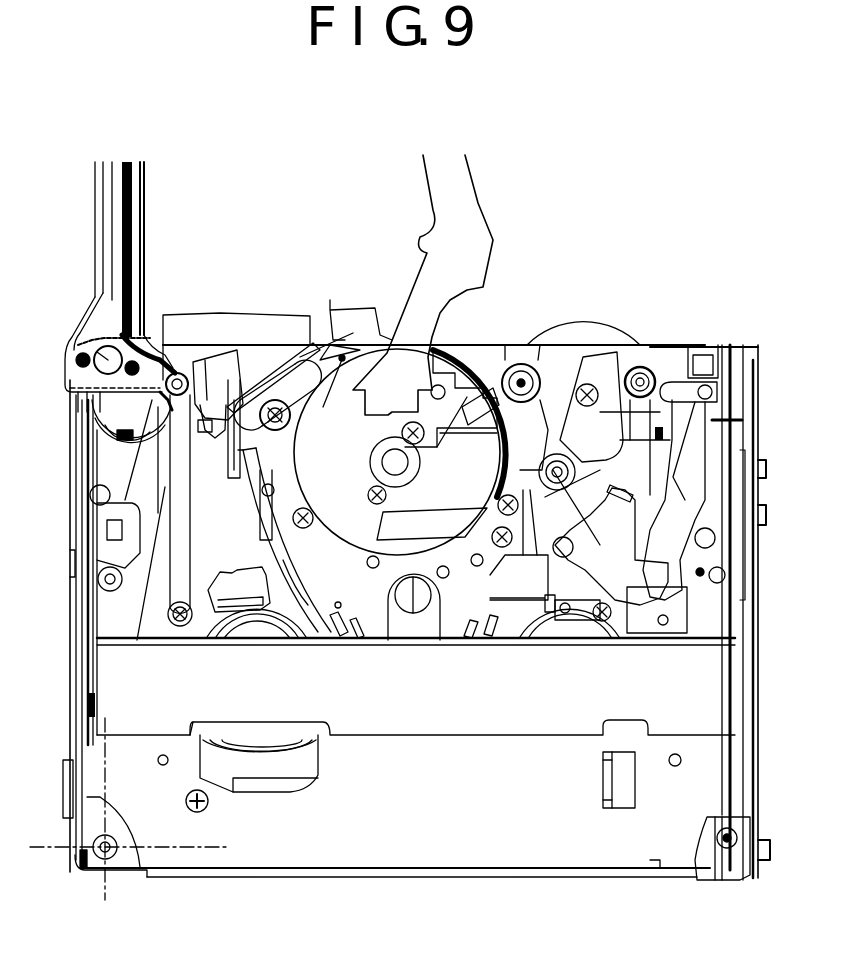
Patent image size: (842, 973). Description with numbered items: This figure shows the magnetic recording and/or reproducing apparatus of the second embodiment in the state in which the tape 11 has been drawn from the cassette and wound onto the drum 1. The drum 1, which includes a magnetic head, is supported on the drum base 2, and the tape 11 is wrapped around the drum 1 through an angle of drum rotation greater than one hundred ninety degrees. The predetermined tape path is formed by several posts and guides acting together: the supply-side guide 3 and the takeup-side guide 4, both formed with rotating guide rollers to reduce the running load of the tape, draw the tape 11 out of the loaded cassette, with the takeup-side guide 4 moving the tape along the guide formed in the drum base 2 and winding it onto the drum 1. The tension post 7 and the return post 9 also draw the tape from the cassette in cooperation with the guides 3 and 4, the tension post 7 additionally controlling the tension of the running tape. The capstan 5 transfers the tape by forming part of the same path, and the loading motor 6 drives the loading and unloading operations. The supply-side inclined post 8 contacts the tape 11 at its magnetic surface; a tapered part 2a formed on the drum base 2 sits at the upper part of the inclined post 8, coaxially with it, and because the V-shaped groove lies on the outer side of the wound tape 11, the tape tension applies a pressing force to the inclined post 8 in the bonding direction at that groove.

The drum 1 is at (338, 407).
The drum base 2 is at (211, 372).
The tapered part 2a is at (222, 478).
The supply-side guide 3 is at (272, 400).
The takeup-side guide 4 is at (532, 365).
The capstan 5 is at (591, 363).
The loading motor 6 is at (100, 358).
The tension post 7 is at (184, 346).
The supply-side inclined post 8 is at (202, 425).
The return post 9 is at (645, 370).
The tape 11 is at (252, 380).